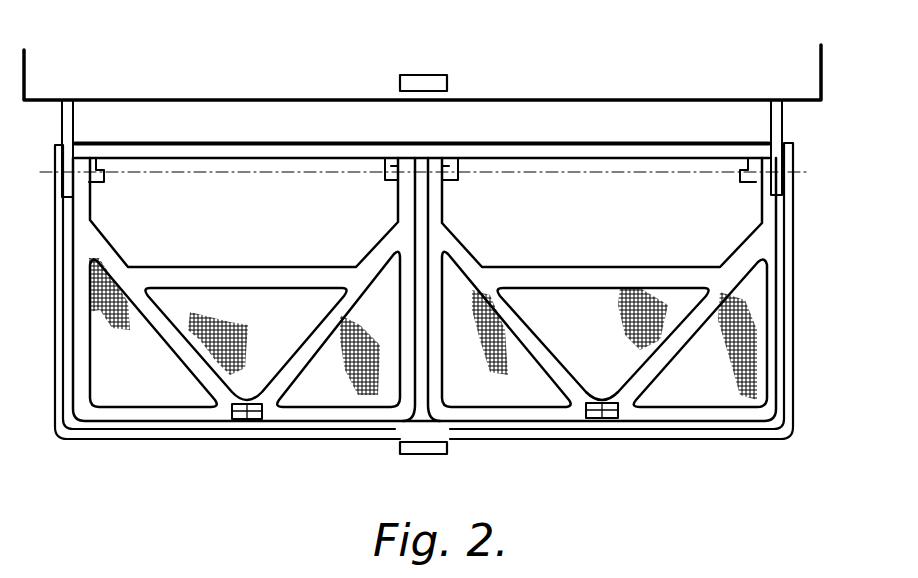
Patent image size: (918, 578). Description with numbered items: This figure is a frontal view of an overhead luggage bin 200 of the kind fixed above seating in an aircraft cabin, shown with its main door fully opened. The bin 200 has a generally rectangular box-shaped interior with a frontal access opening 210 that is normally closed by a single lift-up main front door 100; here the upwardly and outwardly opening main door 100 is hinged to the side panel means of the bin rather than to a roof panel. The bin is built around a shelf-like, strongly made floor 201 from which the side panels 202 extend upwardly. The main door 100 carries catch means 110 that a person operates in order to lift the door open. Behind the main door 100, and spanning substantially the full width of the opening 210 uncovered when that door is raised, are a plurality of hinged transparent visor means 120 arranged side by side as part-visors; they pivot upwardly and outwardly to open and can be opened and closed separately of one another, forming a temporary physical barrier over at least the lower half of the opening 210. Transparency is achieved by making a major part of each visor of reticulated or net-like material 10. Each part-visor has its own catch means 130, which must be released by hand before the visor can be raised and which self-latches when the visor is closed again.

The reticulated or net-like material 10 is at (112, 282).
The main front door 100 is at (48, 78).
The catch means of the main bin door 110 is at (394, 80).
The transparent visor means 120 is at (320, 412).
The catch means of the visor 130 is at (245, 419).
The luggage bin 200 is at (704, 444).
The floor 201 is at (100, 438).
The side panels 202 is at (60, 404).
The frontal access opening 210 is at (258, 225).